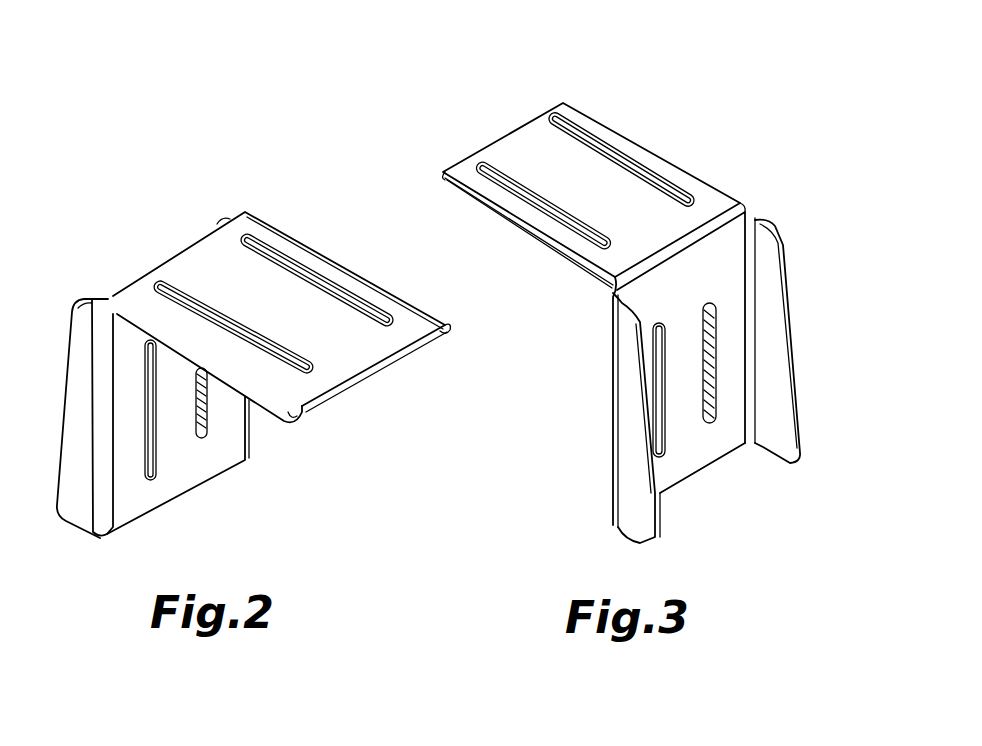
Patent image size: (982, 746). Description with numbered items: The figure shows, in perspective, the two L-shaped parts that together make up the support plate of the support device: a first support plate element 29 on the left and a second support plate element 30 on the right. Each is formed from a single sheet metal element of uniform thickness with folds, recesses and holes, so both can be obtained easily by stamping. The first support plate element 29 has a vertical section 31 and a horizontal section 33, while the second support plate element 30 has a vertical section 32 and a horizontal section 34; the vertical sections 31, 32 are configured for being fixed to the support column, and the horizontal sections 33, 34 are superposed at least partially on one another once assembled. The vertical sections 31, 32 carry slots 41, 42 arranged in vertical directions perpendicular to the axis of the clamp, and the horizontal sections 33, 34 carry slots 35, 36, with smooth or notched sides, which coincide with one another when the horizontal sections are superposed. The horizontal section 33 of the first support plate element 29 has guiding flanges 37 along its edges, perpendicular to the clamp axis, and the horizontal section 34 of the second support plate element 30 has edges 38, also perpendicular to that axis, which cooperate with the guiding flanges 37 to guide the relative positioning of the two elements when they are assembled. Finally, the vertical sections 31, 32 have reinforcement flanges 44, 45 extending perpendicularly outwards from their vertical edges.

In FIG. 2, the first support plate element 29 is at (256, 350).
In FIG. 3, the second support plate element 30 is at (636, 278).
In FIG. 2, the vertical section 31 is at (146, 437).
In FIG. 3, the vertical section 32 is at (697, 373).
In FIG. 2, the horizontal section 33 is at (298, 347).
In FIG. 3, the horizontal section 34 is at (592, 192).
In FIG. 2, the slots 35 is at (311, 368).
In FIG. 3, the slots 36 is at (610, 141).
In FIG. 2, the guiding flanges 37 is at (278, 419).
In FIG. 3, the edges 38 is at (665, 160).
In FIG. 2, the slots 41 is at (152, 481).
In FIG. 3, the slots 42 is at (657, 395).
In FIG. 2, the reinforcement flange 44 is at (78, 503).
In FIG. 3, the reinforcement flanges 45 is at (776, 377).